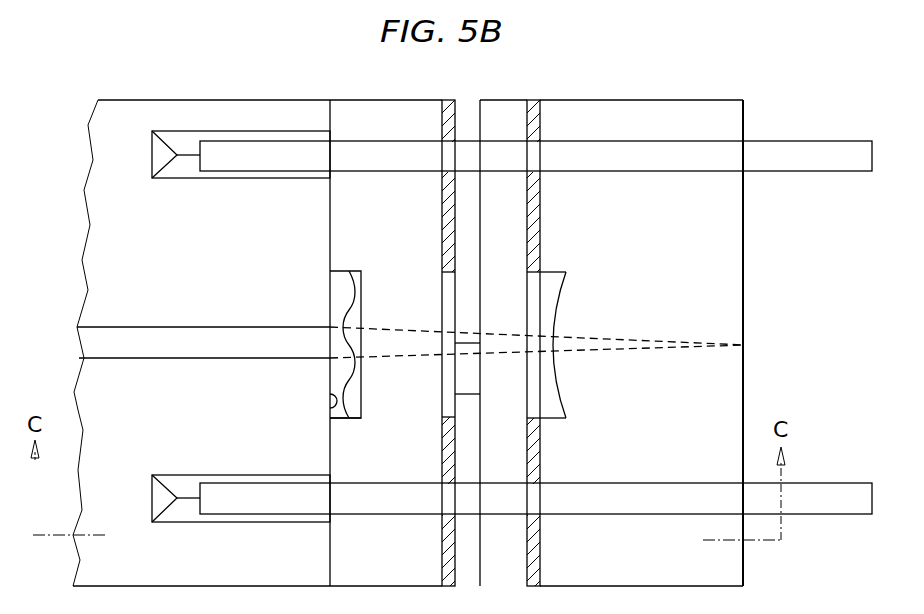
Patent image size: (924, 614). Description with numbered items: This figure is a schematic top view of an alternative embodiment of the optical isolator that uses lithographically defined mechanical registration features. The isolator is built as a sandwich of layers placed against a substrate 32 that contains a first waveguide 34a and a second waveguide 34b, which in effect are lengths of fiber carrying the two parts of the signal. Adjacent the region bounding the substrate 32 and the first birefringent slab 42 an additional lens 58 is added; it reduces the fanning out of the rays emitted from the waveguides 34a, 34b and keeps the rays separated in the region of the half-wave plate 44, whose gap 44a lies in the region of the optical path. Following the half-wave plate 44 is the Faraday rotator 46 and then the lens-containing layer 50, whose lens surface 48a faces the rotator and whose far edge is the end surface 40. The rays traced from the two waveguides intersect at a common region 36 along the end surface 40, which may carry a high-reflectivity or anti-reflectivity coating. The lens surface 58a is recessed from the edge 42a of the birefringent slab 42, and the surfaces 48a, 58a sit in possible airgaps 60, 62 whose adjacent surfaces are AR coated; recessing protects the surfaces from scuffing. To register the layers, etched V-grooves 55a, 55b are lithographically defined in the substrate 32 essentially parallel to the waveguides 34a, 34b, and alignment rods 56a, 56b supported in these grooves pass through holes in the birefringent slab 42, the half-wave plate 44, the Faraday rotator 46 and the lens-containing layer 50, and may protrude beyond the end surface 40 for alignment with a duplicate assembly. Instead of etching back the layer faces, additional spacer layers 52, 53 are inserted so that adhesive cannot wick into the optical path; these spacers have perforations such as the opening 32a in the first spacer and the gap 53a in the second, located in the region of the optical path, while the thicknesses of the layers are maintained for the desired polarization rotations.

The substrate 32 is at (193, 100).
The opening in first aperture plate 32a is at (447, 410).
The first waveguide 34a is at (137, 326).
The second waveguide 34b is at (137, 360).
The common region of reflection 36 is at (745, 345).
The end surface 40 is at (741, 418).
The birefringent slab 42 is at (396, 100).
The edge of birefringent slab 42a is at (328, 404).
The half-wave plate 44 is at (472, 258).
The gap 44a is at (462, 374).
The Faraday rotator 46 is at (500, 203).
The lens surface 48a is at (558, 322).
The lens-containing layer 50 is at (650, 102).
The spacer layer 52 is at (446, 101).
The spacer layer 53 is at (531, 101).
The perforation in spacer layer 53a is at (535, 400).
The etched V-groove 55a is at (180, 179).
The etched V-groove 55b is at (180, 475).
The alignment rod 56a is at (807, 148).
The alignment rod 56b is at (388, 515).
The additional lens 58 is at (350, 272).
The lens surface 58a is at (336, 292).
The airgap 60 is at (346, 420).
The airgap 62 is at (560, 398).